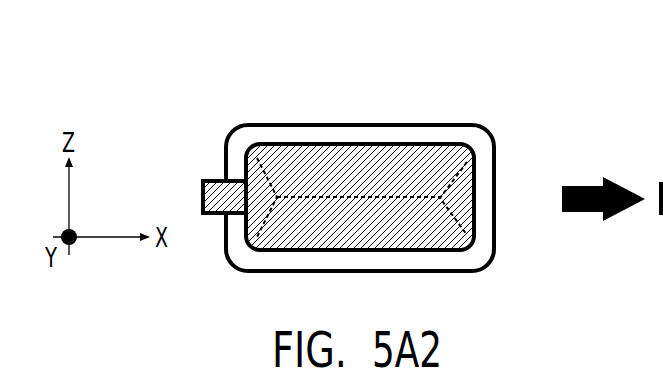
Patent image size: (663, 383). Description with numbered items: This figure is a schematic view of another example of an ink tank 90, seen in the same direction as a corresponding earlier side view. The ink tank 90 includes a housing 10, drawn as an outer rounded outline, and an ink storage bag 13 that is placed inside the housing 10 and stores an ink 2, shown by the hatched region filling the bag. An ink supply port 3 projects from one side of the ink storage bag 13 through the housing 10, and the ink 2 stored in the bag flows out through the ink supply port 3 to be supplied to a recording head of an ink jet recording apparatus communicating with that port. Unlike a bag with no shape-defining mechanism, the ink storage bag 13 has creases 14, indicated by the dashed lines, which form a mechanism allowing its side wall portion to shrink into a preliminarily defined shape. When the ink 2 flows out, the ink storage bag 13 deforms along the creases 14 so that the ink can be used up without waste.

The ink tank 90 is at (446, 70).
The housing 10 is at (362, 125).
The ink storage bag 13 is at (280, 144).
The ink 2 is at (418, 162).
The ink supply port 3 is at (203, 190).
The creases 14 is at (478, 165).